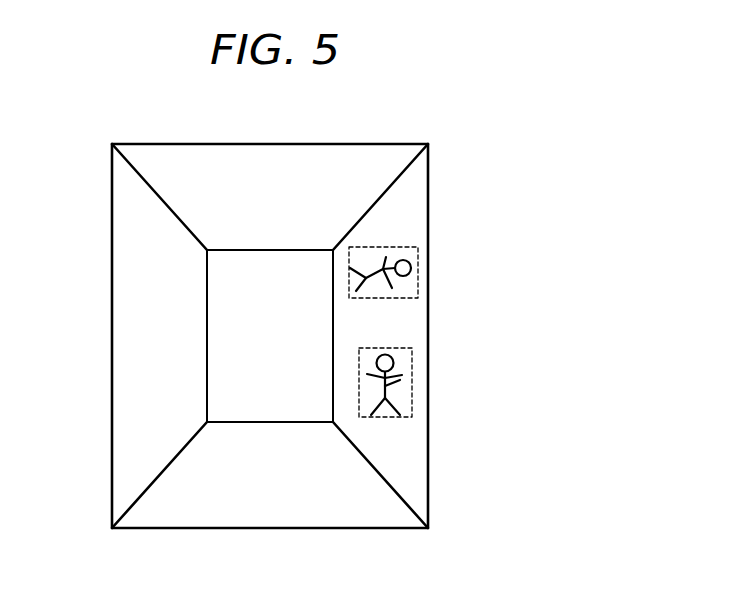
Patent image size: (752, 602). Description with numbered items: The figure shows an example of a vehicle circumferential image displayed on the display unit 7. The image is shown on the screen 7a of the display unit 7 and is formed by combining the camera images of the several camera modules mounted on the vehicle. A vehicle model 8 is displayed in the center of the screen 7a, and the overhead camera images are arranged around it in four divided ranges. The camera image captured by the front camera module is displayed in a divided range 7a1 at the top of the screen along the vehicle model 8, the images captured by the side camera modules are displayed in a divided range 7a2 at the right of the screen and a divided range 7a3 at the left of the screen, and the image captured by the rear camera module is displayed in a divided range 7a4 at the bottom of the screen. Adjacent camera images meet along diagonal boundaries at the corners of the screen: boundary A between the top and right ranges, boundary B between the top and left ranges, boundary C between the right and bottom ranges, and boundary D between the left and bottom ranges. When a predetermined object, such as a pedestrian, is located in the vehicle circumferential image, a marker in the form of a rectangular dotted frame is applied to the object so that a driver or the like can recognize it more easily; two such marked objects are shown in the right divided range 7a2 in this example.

The display unit 7 is at (373, 142).
The screen 7a is at (313, 165).
The divided range 7a1 is at (232, 172).
The divided range 7a2 is at (415, 327).
The divided range 7a3 is at (120, 342).
The divided range 7a4 is at (256, 522).
The vehicle model 8 is at (274, 348).
The boundary A is at (397, 182).
The boundary B is at (140, 180).
The boundary C is at (392, 483).
The boundary D is at (135, 500).